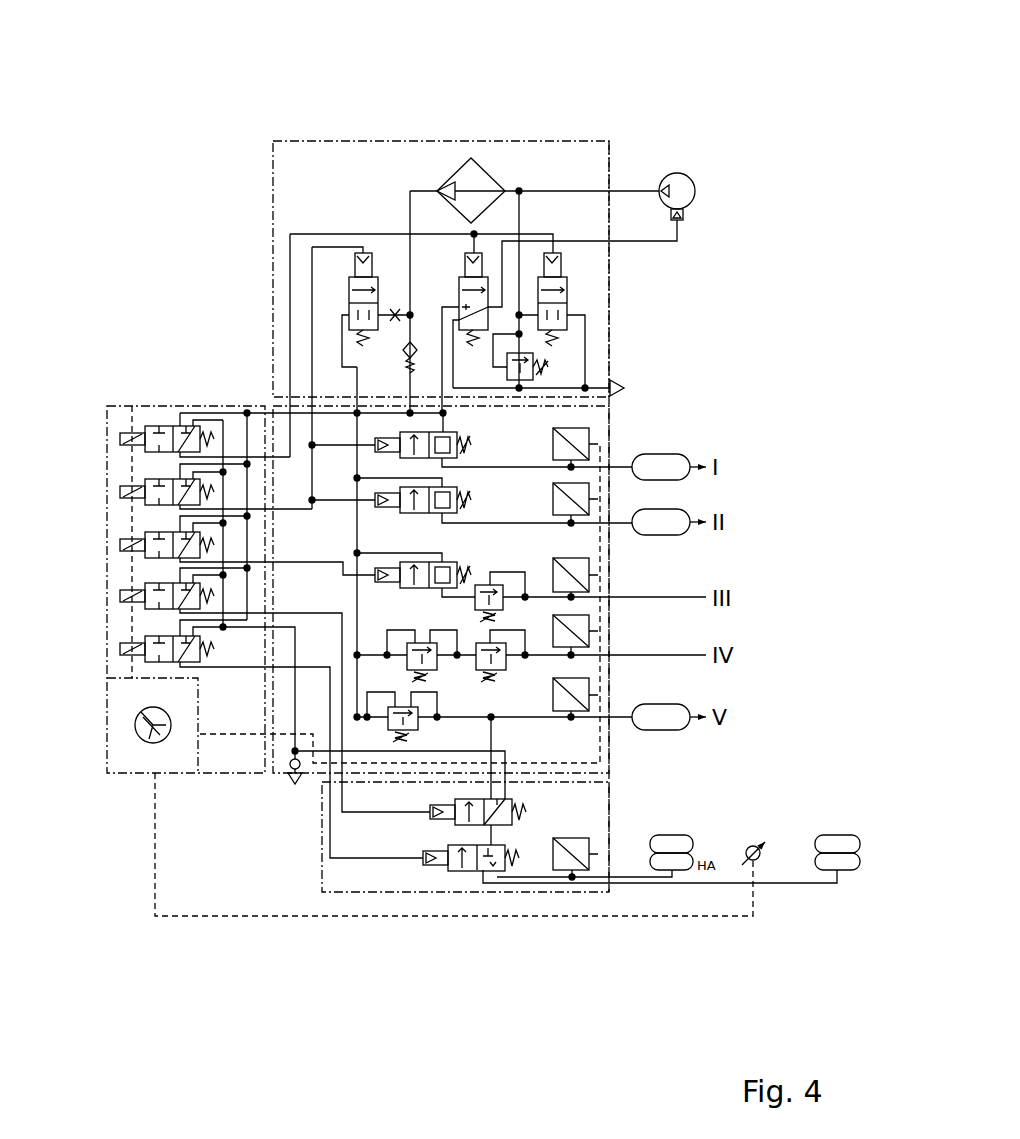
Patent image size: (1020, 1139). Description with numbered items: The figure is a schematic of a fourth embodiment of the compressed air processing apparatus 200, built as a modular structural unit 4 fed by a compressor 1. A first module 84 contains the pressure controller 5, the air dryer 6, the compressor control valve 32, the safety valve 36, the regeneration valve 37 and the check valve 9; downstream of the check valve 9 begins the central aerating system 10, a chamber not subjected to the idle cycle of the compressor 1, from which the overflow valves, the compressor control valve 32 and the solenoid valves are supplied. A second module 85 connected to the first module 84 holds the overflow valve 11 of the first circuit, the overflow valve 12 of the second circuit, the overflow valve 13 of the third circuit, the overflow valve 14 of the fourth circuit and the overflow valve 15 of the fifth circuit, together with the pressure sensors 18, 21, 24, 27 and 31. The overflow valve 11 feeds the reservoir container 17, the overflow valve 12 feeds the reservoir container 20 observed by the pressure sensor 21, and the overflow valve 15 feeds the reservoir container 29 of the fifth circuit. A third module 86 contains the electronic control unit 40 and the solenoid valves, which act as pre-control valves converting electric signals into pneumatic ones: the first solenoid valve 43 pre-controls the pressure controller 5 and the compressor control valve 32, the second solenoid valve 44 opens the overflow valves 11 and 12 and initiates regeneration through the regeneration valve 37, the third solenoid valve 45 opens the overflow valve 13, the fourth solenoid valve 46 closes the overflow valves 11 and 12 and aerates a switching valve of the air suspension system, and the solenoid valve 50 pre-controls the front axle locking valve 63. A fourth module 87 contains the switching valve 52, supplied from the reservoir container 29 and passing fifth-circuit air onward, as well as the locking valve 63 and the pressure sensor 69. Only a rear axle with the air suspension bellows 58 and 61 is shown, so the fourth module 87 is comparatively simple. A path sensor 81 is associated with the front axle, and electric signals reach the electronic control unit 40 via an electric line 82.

The compressor 1 is at (677, 185).
The structural unit 4 is at (547, 140).
The pressure controller 5 is at (582, 297).
The air dryer 6 is at (490, 163).
The check valve 9 is at (403, 350).
The central aerating system 10 is at (357, 655).
The overflow valve 11 is at (485, 440).
The overflow valve 12 is at (482, 563).
The overflow valve 13 is at (432, 527).
The overflow valve 14 is at (452, 669).
The overflow valve 15 is at (437, 730).
The reservoir container 17 is at (655, 466).
The pressure sensor 18 is at (590, 432).
The reservoir container 20 is at (670, 522).
The pressure sensor 21 is at (598, 488).
The pressure sensor 24 is at (598, 567).
The pressure sensor 27 is at (598, 630).
The reservoir container 29 is at (662, 718).
The pressure sensor 31 is at (598, 685).
The compressor control valve 32 is at (443, 280).
The safety valve 36 is at (557, 365).
The regeneration valve 37 is at (338, 287).
The electronic control unit 40 is at (127, 710).
The first solenoid valve 43 is at (107, 439).
The second solenoid valve 44 is at (107, 492).
The third solenoid valve 45 is at (107, 545).
The fourth solenoid valve 46 is at (107, 596).
The solenoid valve 50 is at (107, 649).
The switching valve 52 is at (540, 815).
The air suspension bellows 58 is at (667, 845).
The air suspension bellow 61 is at (835, 848).
The locking valve 63 is at (460, 880).
The pressure sensor 69 is at (567, 860).
The path sensor 81 is at (753, 846).
The electric line 82 is at (325, 917).
The first module 84 is at (609, 163).
The second module 85 is at (607, 410).
The third module 86 is at (162, 405).
The fourth module 87 is at (320, 868).
The compressed air processing apparatus 200 is at (213, 143).